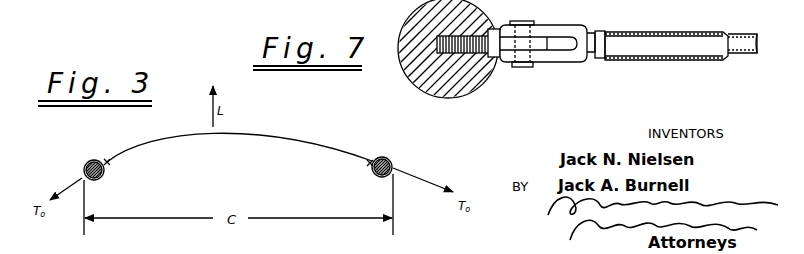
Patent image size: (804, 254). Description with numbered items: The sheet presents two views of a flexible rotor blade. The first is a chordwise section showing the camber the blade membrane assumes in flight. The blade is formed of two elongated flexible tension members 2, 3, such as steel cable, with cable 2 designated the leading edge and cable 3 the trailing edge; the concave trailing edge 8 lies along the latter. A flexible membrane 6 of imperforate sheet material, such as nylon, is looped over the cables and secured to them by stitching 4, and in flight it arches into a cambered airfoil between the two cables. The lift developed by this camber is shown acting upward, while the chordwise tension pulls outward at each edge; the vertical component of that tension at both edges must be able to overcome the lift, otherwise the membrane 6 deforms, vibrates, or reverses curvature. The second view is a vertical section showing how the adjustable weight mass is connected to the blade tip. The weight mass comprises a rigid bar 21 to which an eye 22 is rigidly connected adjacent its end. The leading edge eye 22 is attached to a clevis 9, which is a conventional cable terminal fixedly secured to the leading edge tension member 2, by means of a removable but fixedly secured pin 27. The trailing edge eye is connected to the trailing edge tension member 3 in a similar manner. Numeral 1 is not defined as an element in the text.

In FIG. 3, the first anchor fitting 1 is at (84, 165).
In FIG. 3, the leading edge tension member 2 is at (107, 160).
In FIG. 7, the leading edge tension member 2 is at (743, 40).
In FIG. 3, the trailing edge tension member 3 is at (385, 157).
In FIG. 3, the stitching 4 is at (111, 161).
In FIG. 3, the flexible membrane 6 is at (295, 140).
In FIG. 7, the flexible membrane 6 is at (660, 32).
In FIG. 3, the trailing edge 8 is at (394, 163).
In FIG. 7, the clevis member 9 is at (563, 58).
In FIG. 7, the rigid bar 21 is at (417, 4).
In FIG. 7, the eye 22 is at (553, 63).
In FIG. 7, the pin 27 is at (518, 21).